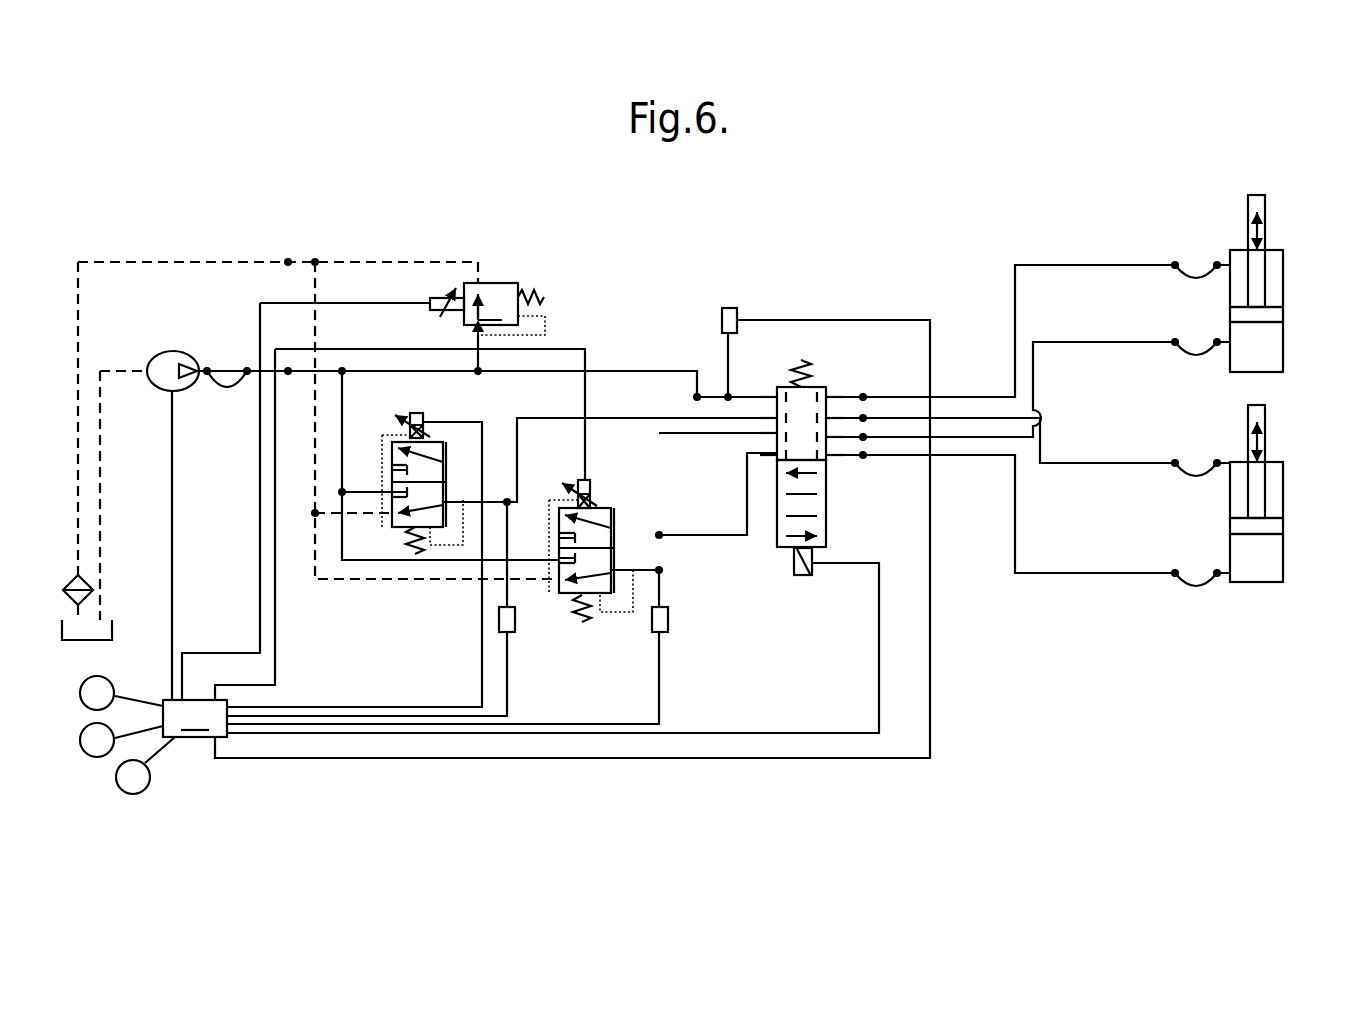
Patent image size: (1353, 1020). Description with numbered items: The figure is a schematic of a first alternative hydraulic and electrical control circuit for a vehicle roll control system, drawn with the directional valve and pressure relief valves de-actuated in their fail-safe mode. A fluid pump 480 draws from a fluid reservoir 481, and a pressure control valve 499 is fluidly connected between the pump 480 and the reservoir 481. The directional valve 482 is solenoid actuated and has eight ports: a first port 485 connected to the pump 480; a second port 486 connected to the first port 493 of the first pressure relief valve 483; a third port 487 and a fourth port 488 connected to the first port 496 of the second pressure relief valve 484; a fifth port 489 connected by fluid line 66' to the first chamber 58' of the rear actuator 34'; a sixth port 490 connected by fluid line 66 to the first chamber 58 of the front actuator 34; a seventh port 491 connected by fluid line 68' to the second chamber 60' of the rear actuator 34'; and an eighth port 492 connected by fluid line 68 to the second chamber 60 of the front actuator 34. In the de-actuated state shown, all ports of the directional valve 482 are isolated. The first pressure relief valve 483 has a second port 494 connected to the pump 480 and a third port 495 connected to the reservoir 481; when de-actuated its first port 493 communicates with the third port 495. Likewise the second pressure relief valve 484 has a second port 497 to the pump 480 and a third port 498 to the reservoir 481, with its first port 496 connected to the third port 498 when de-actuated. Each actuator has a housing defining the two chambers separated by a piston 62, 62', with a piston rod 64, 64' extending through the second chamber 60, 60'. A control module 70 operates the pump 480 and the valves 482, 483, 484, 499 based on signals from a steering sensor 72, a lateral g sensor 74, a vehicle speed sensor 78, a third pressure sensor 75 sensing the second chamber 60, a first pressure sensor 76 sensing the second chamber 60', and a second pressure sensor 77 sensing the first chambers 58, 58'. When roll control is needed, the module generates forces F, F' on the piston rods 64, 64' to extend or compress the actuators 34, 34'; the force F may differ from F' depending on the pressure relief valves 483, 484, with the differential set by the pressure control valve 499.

The front hydraulic actuator 34 is at (1270, 276).
The rear hydraulic actuator 34' is at (1274, 483).
The first fluid chamber 58 is at (1282, 349).
The first chamber of rear actuator 58' is at (1285, 559).
The second fluid chamber 60 is at (1282, 278).
The second chamber of rear actuator 60' is at (1285, 490).
The piston 62 is at (1282, 321).
The piston of rear actuator 62' is at (1285, 529).
The piston rod 64 is at (1291, 251).
The piston rod of rear actuator 64' is at (1288, 450).
The fluid line 66 is at (1105, 317).
The fluid line 66' is at (1105, 549).
The fluid line 68 is at (1105, 239).
The fluid line 68' is at (1105, 439).
The control module 70 is at (195, 718).
The steering sensor 72 is at (121, 693).
The lateral g sensor 74 is at (121, 740).
The vehicle speed sensor 78 is at (145, 765).
The third pressure sensor 75 is at (722, 320).
The first pressure sensor 76 is at (515, 622).
The second pressure sensor 77 is at (668, 620).
The force F is at (1228, 229).
The force F' is at (1230, 439).
The fluid pump 480 is at (183, 392).
The fluid reservoir 481 is at (112, 627).
The directional valve 482 is at (788, 430).
The first pressure relief valve 483 is at (439, 498).
The second pressure relief valve 484 is at (582, 524).
The first port 485 is at (777, 397).
The second port 486 is at (777, 414).
The third port 487 is at (777, 433).
The fourth port 488 is at (777, 455).
The fifth port 489 is at (828, 457).
The sixth port 490 is at (828, 439).
The seventh port 491 is at (830, 418).
The eighth port 492 is at (826, 397).
The first port 493 is at (445, 502).
The second port 494 is at (392, 490).
The third port 495 is at (392, 512).
The first port 496 is at (611, 580).
The second port 497 is at (559, 558).
The third port 498 is at (559, 578).
The pressure control valve 499 is at (530, 268).